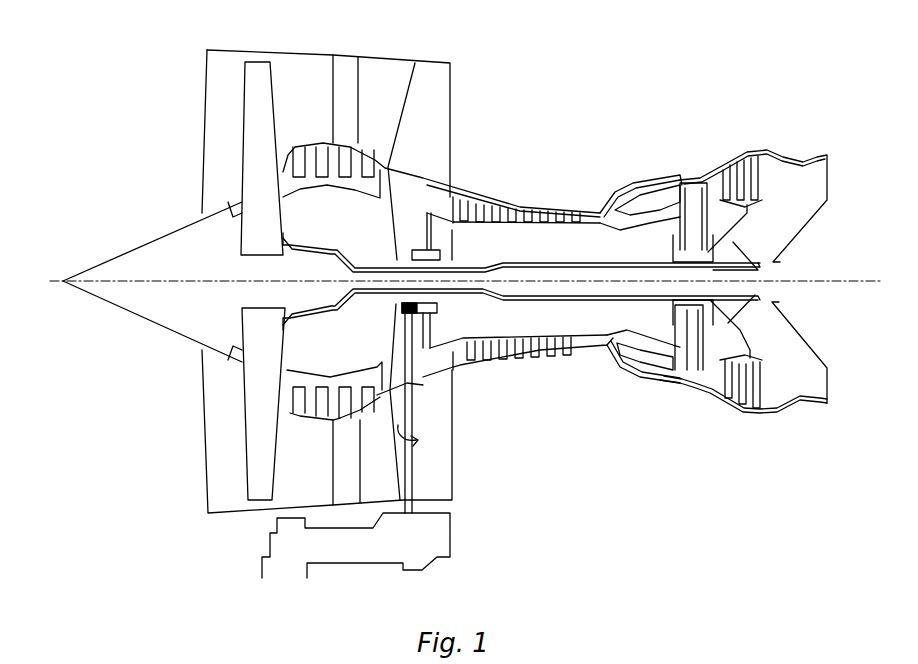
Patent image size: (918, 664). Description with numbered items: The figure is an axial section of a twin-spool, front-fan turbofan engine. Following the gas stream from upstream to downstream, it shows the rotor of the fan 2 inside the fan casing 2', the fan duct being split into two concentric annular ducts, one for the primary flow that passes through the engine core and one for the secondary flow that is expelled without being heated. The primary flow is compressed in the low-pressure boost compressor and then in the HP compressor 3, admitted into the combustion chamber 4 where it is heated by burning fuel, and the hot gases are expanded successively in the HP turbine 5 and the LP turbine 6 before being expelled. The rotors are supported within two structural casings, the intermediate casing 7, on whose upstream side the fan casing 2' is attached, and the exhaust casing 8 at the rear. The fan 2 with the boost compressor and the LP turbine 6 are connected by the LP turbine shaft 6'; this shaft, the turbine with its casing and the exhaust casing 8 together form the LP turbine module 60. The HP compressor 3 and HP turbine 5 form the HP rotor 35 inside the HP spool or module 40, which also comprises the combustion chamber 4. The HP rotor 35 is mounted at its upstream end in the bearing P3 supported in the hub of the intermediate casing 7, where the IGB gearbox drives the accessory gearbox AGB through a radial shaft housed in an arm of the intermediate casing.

The fan 2 is at (174, 281).
The fan casing 2' is at (311, 256).
The intermediate casing 7 is at (455, 67).
The HP compressor 3 is at (470, 193).
The HP spool or module 40 is at (521, 187).
The HP rotor 35 is at (535, 317).
The combustion chamber 4 is at (647, 202).
The HP turbine 5 is at (695, 183).
The LP turbine 6 is at (753, 175).
The LP turbine shaft 6' is at (521, 332).
The LP turbine module 60 is at (747, 420).
The exhaust casing 8 is at (813, 380).
The bearing P3 is at (447, 305).
The accessory gearbox AGB is at (375, 552).